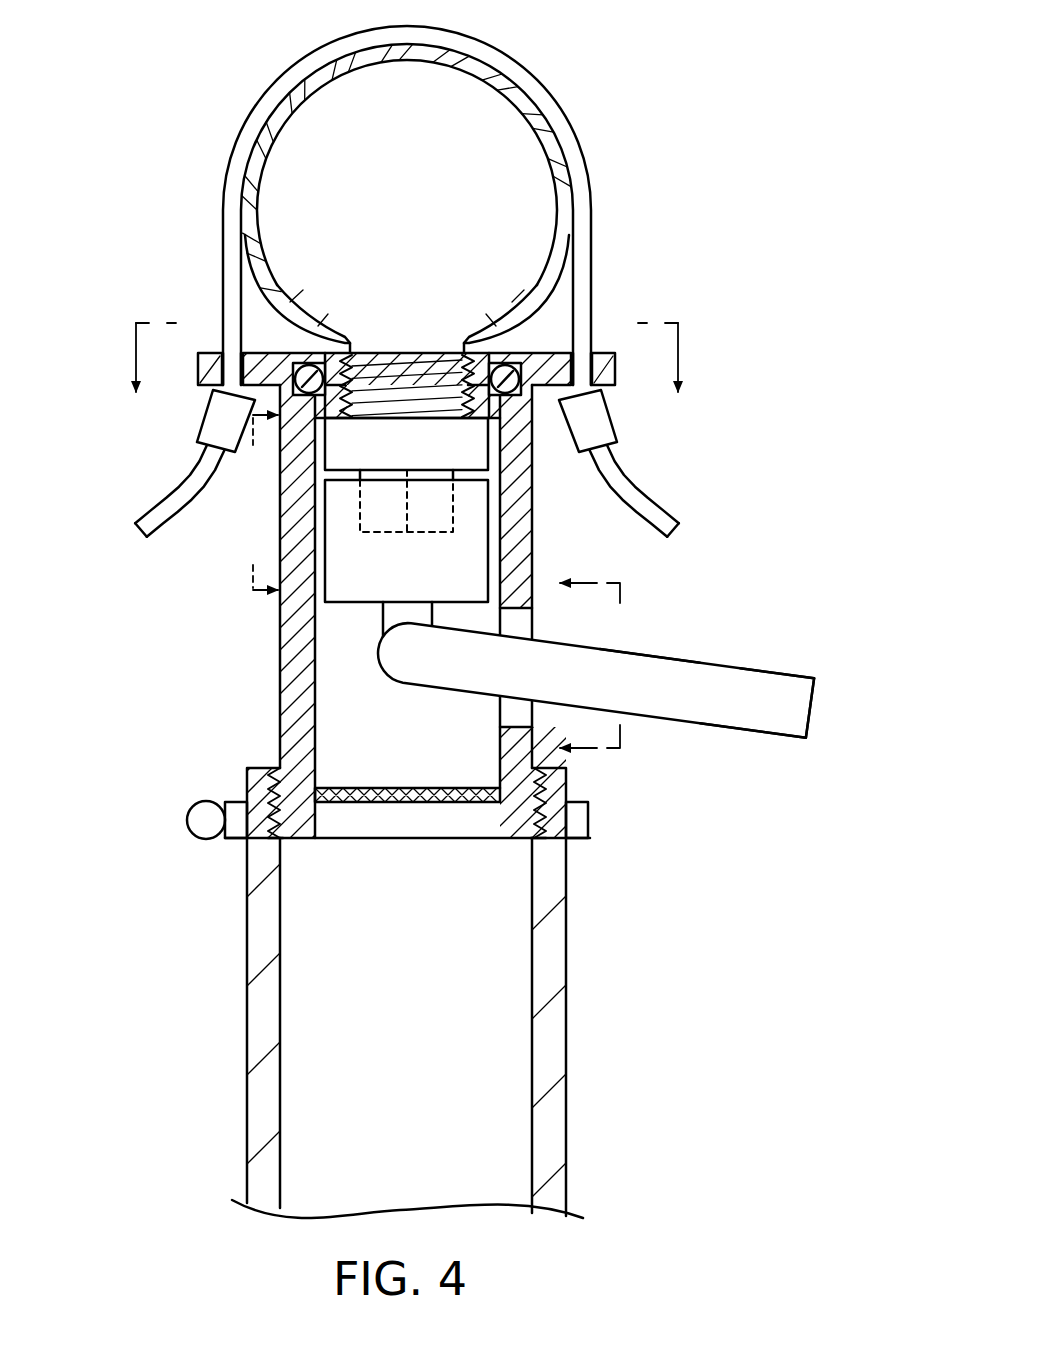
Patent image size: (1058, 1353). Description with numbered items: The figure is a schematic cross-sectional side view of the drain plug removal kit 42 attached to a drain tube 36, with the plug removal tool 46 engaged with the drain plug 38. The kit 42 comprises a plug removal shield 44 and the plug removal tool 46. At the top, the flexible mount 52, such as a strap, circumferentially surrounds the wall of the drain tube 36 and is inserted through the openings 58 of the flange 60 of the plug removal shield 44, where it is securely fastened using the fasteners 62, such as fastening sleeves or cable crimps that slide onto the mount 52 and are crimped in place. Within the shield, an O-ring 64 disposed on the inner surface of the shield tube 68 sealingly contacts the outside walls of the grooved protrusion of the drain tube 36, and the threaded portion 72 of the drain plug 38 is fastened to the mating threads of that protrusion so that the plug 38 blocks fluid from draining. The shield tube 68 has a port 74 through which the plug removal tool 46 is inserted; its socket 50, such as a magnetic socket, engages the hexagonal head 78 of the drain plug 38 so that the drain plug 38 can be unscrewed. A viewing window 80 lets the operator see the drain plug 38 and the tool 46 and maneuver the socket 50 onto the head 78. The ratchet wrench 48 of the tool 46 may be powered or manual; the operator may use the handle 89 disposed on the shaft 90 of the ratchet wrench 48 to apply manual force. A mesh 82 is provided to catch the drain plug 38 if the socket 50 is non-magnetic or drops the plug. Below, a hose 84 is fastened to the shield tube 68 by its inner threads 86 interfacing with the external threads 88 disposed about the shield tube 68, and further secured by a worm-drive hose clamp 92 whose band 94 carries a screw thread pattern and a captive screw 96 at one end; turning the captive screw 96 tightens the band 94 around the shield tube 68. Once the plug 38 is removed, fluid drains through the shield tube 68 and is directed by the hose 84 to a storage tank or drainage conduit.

The drain tube 36 is at (283, 90).
The drain plug 38 is at (385, 458).
The plug removal kit 42 is at (529, 612).
The plug removal shield 44 is at (529, 733).
The plug removal tool 46 is at (655, 648).
The ratchet wrench 48 is at (763, 735).
The socket 50 is at (385, 584).
The mount 52 is at (542, 82).
The openings 58 is at (225, 360).
The flange 60 is at (207, 362).
The fasteners 62 is at (206, 413).
The O-ring 64 is at (305, 355).
The shield tube 68 is at (282, 722).
The threaded portion 72 is at (400, 372).
The port 74 is at (517, 630).
The hexagonal head 78 is at (445, 505).
The viewing window 80 is at (293, 522).
The mesh 82 is at (395, 788).
The hose 84 is at (572, 1030).
The inner threads 86 is at (289, 834).
The external threads 88 is at (266, 812).
The handle 89 is at (772, 690).
The shaft 90 is at (813, 712).
The worm-drive hose clamp 92 is at (170, 830).
The band 94 is at (580, 817).
The captive screw 96 is at (188, 810).